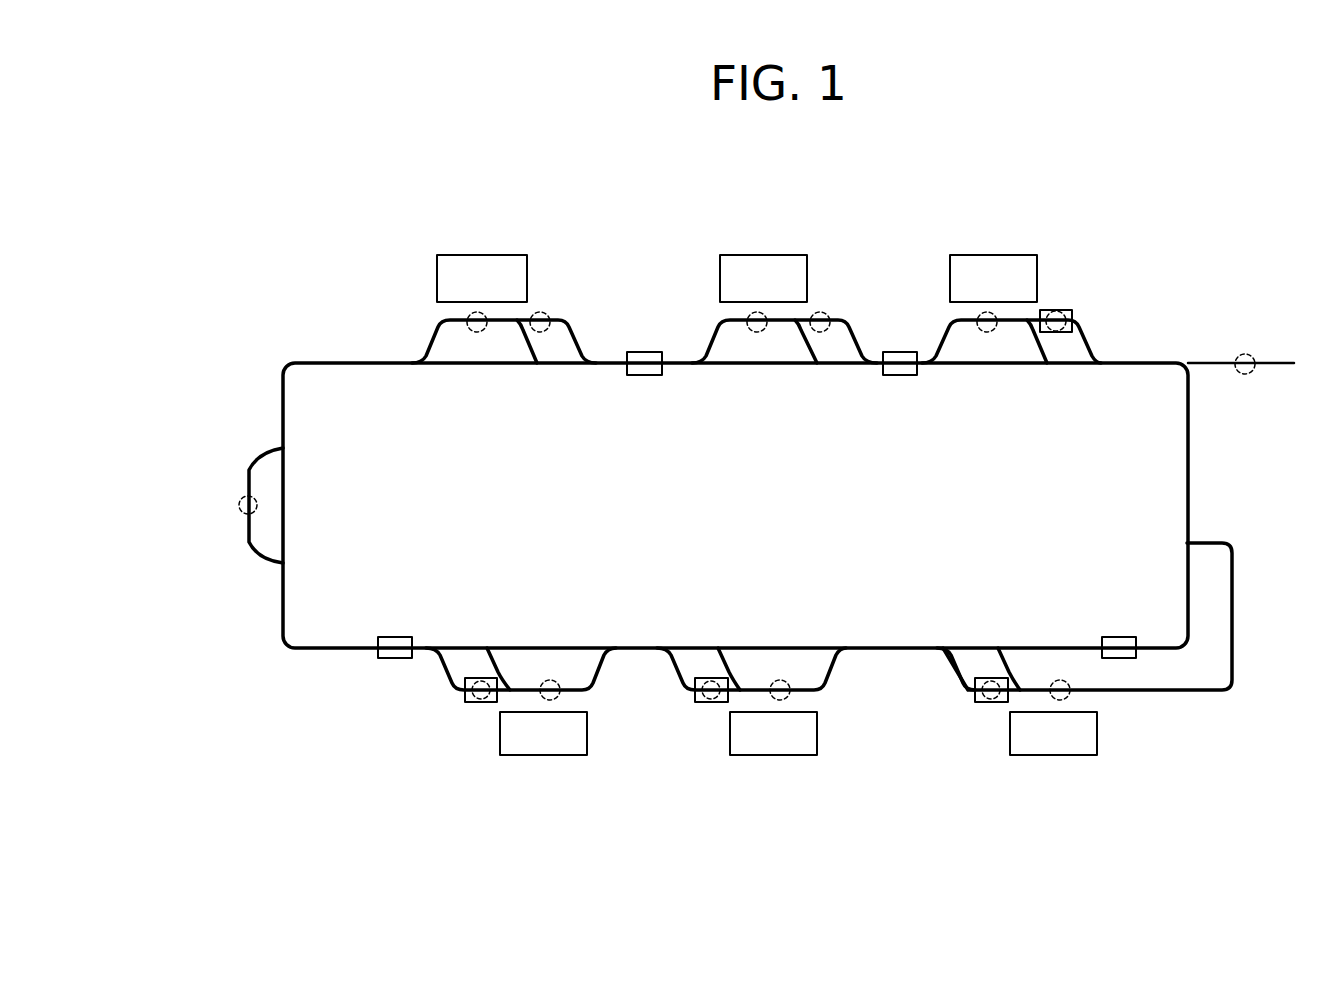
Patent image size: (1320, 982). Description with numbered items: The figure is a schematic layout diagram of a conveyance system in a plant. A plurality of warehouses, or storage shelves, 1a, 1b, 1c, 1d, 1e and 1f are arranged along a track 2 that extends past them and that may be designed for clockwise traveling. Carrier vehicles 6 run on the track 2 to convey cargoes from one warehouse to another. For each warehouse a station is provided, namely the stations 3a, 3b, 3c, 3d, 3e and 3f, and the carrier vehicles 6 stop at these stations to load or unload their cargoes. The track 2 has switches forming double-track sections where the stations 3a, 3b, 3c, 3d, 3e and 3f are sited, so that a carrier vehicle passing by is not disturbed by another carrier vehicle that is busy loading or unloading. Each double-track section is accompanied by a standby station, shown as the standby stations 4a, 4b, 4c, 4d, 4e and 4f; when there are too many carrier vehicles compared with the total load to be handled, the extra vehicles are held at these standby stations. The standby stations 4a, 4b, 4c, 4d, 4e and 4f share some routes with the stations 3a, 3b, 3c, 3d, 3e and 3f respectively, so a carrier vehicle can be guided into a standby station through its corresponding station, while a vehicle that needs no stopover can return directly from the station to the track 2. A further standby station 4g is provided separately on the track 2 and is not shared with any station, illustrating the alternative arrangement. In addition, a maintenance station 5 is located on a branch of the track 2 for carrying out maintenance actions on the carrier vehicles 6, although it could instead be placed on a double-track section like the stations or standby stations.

The warehouse 1a is at (489, 230).
The warehouse 1b is at (771, 230).
The warehouse 1c is at (1001, 230).
The warehouse 1d is at (1047, 779).
The warehouse 1e is at (767, 779).
The warehouse 1f is at (542, 779).
The track 2 is at (788, 478).
The station 3a is at (442, 245).
The station 3b is at (723, 244).
The station 3c is at (954, 244).
The station 3d is at (1097, 766).
The station 3e is at (817, 766).
The station 3f is at (588, 765).
The standby station 4a is at (570, 269).
The standby station 4b is at (851, 268).
The standby station 4c is at (1084, 268).
The standby station 4d is at (974, 744).
The standby station 4e is at (694, 744).
The standby station 4f is at (463, 745).
The standby station 4g is at (209, 498).
The maintenance station 5 is at (1268, 313).
The carrier vehicle 6 is at (757, 506).